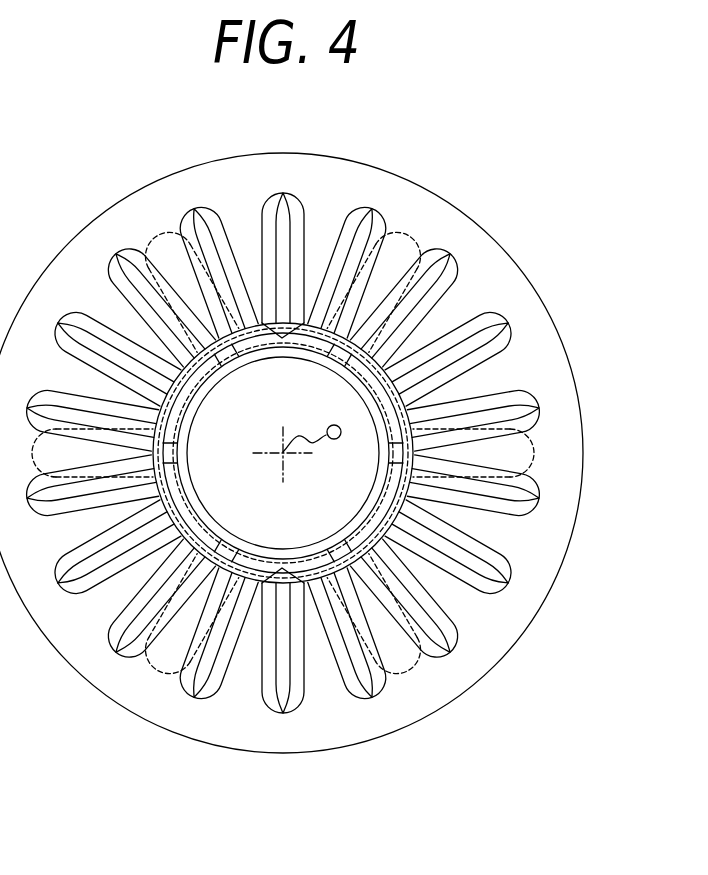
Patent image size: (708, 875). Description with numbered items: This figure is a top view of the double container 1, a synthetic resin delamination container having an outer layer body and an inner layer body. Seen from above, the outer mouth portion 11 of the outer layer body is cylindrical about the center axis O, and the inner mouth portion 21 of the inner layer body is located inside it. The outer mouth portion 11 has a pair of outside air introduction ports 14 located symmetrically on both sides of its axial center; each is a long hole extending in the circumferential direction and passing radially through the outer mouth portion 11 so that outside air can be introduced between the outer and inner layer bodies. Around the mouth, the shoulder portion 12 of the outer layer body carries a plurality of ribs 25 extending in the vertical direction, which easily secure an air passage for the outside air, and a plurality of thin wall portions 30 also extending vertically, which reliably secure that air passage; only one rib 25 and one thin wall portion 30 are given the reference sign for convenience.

The double container 1 is at (329, 437).
The outer mouth portion 11 is at (405, 408).
The shoulder portion 12 is at (545, 358).
The outside air introduction port 14 is at (282, 338).
The inner mouth portion 21 is at (350, 388).
The rib 25 is at (468, 338).
The thin wall portion 30 is at (533, 449).